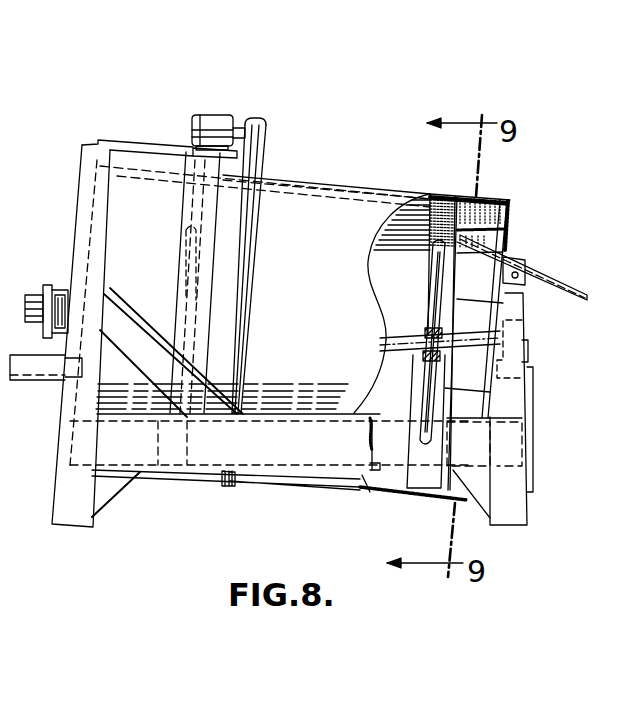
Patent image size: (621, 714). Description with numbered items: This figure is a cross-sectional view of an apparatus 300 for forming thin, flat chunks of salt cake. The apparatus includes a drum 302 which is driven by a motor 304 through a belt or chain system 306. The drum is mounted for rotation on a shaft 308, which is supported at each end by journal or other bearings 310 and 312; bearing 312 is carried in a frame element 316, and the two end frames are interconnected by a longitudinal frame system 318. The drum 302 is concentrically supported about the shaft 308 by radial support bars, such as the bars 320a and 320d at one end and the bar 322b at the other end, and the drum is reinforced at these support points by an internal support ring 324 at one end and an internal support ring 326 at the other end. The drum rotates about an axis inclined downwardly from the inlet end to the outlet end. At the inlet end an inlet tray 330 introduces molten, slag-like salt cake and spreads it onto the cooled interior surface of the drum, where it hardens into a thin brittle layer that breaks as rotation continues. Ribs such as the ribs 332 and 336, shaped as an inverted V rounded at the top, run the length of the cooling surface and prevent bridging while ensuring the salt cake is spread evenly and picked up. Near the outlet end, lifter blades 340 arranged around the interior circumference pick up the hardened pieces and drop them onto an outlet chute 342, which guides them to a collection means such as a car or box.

The apparatus 300 is at (340, 94).
The drum 302 is at (337, 183).
The motor 304 is at (238, 114).
The belt or chain system 306 is at (262, 170).
The shaft 308 is at (407, 338).
The bearing 310 is at (45, 292).
The bearing 312 is at (528, 340).
The frame element 316 is at (533, 495).
The longitudinal frame system 318 is at (165, 478).
The radial support bar 320a is at (377, 283).
The radial support bar 320d is at (388, 378).
The radial support bar 322b is at (175, 265).
The internal support ring 324 is at (430, 275).
The internal support ring 326 is at (178, 226).
The inlet tray 330 is at (32, 382).
The rib 332 is at (298, 199).
The rib 336 is at (405, 416).
The lifter blade 340 is at (478, 213).
The outlet chute 342 is at (552, 272).